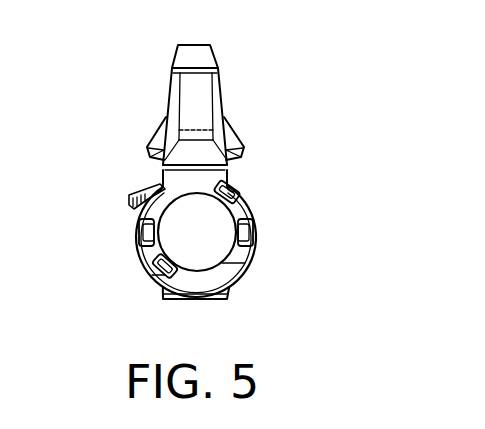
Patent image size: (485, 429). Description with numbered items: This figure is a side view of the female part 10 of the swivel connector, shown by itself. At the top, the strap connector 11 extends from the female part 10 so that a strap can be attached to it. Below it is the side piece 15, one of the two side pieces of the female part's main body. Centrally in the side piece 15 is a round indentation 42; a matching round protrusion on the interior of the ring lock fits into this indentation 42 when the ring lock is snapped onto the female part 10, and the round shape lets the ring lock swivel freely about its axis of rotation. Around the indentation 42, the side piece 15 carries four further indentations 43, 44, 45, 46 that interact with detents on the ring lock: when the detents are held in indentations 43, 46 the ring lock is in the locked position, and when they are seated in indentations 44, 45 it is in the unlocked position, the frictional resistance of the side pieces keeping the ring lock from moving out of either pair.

The female part 10 is at (88, 190).
The strap connector 11 is at (200, 80).
The side piece 15 is at (257, 228).
The indentation 42 is at (215, 228).
The indentation 43 is at (133, 240).
The indentation 44 is at (145, 267).
The indentation 45 is at (241, 189).
The indentation 46 is at (253, 237).